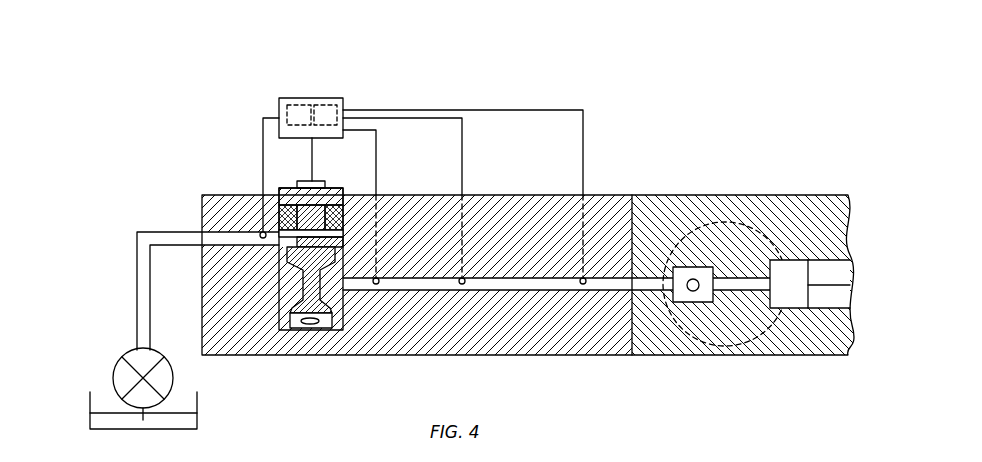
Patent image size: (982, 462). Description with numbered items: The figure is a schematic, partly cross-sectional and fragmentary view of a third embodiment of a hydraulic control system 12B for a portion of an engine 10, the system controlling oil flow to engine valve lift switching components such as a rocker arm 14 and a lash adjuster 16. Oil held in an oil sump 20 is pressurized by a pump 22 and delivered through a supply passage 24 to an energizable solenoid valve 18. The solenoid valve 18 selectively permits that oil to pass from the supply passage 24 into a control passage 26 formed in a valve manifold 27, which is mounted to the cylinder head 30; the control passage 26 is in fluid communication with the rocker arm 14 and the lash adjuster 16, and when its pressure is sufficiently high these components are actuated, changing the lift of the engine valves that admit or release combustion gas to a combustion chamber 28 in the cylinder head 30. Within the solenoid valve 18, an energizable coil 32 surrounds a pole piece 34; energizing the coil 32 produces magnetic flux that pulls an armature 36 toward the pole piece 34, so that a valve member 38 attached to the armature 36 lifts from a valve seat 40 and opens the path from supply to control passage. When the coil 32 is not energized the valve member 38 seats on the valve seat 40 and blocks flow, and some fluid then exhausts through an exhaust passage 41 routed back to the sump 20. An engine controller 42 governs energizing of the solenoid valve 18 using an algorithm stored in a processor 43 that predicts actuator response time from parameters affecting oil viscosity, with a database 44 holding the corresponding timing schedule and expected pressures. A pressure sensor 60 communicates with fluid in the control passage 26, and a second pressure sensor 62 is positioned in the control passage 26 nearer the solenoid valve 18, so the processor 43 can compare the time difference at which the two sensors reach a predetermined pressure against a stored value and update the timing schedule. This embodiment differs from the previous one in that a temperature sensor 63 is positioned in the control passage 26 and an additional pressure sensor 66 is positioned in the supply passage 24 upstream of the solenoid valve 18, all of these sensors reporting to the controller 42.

The engine 10 is at (694, 70).
The hydraulic control system 12B is at (580, 82).
The rocker arm 14 is at (823, 260).
The lash adjuster 16 is at (693, 302).
The solenoid valve 18 is at (255, 165).
The oil sump 20 is at (90, 402).
The pump 22 is at (123, 355).
The supply passage 24 is at (137, 292).
The control passage 26 is at (503, 287).
The valve manifold 27 is at (607, 195).
The combustion chamber 28 is at (790, 200).
The cylinder head 30 is at (732, 195).
The energizable coil 32 is at (334, 220).
The pole piece 34 is at (312, 212).
The armature 36 is at (300, 233).
The valve member 38 is at (340, 237).
The valve seat 40 is at (330, 253).
The exhaust passage 41 is at (308, 326).
The engine controller 42 is at (343, 100).
The processor 43 is at (325, 98).
The database 44 is at (300, 98).
The pressure sensor 60 is at (583, 284).
The pressure sensor 62 is at (376, 284).
The temperature sensor 63 is at (462, 284).
The pressure sensor 66 is at (262, 238).